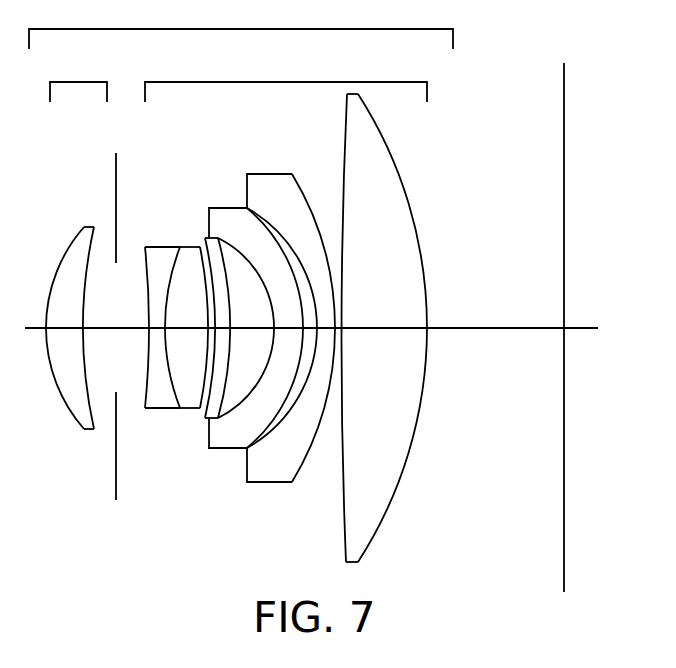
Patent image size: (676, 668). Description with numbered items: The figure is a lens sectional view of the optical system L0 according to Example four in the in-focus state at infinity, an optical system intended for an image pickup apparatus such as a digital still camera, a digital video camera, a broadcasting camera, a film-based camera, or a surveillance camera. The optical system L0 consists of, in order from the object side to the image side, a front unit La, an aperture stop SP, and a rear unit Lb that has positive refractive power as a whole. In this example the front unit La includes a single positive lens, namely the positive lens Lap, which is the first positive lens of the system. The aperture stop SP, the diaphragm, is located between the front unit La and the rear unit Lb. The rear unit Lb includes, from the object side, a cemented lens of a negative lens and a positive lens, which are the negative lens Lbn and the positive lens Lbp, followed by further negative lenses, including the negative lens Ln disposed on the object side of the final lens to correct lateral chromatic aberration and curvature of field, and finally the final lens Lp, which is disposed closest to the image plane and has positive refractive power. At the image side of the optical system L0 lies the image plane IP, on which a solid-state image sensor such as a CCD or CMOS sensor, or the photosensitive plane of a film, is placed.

The optical system L0 is at (241, 25).
The front unit La is at (78, 77).
The rear unit Lb is at (286, 78).
The aperture stop SP is at (116, 162).
The image plane IP is at (564, 70).
The positive lens Lap is at (84, 428).
The negative lens Lbn is at (163, 408).
The positive lens Lbp is at (190, 408).
The negative lens Ln is at (268, 482).
The final lens Lp is at (363, 560).